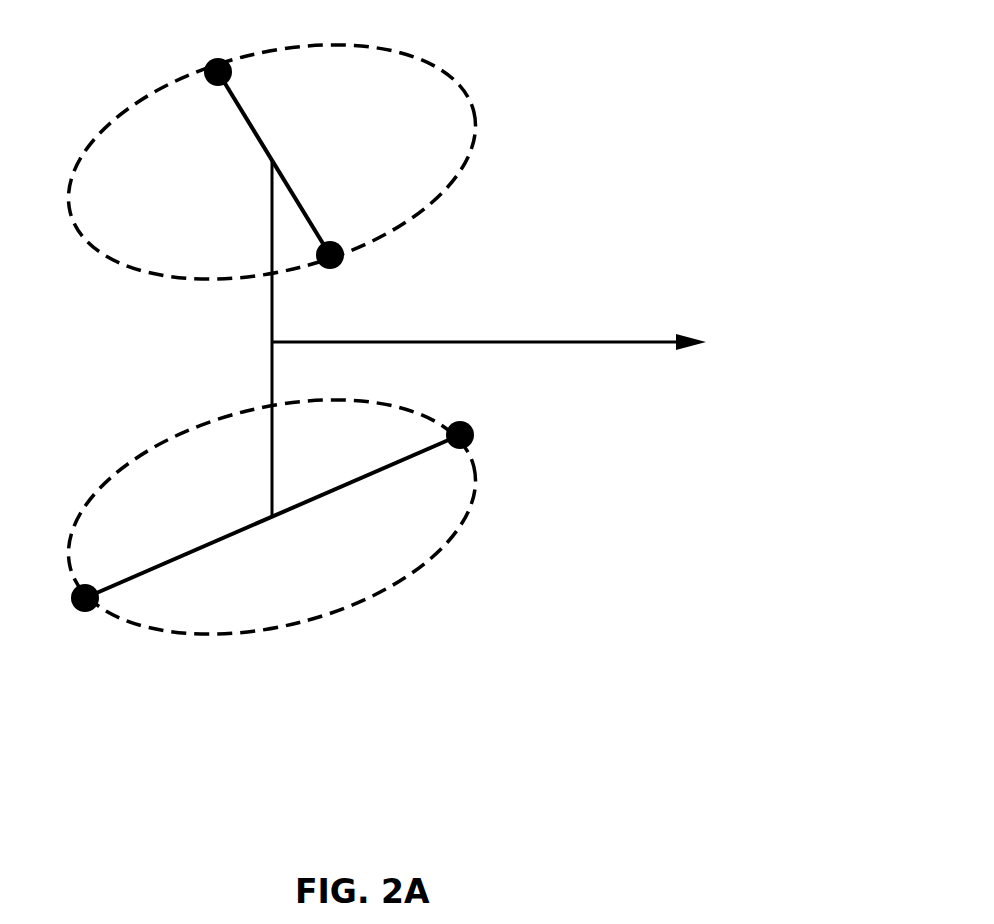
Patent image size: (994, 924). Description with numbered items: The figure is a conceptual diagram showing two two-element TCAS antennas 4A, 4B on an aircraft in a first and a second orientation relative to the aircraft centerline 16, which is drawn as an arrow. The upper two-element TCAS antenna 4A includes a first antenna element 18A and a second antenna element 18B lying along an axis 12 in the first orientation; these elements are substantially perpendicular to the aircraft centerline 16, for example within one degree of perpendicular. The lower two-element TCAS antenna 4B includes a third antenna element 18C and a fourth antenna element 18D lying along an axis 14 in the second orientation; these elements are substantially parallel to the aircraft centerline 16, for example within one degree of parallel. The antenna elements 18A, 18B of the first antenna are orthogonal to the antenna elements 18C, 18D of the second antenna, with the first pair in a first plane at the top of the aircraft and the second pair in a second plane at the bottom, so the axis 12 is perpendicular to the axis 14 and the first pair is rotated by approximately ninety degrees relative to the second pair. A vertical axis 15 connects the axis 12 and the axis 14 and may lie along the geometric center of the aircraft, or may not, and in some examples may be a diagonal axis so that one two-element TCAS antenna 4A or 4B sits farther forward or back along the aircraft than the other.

The two-element TCAS antenna 4A is at (434, 60).
The two-element TCAS antenna 4B is at (372, 597).
The axis 12 is at (258, 134).
The axis 14 is at (305, 509).
The vertical axis 15 is at (270, 376).
The aircraft centerline 16 is at (598, 341).
The first antenna element 18A is at (207, 60).
The second antenna element 18B is at (339, 268).
The third antenna element 18C is at (78, 613).
The fourth antenna element 18D is at (471, 424).